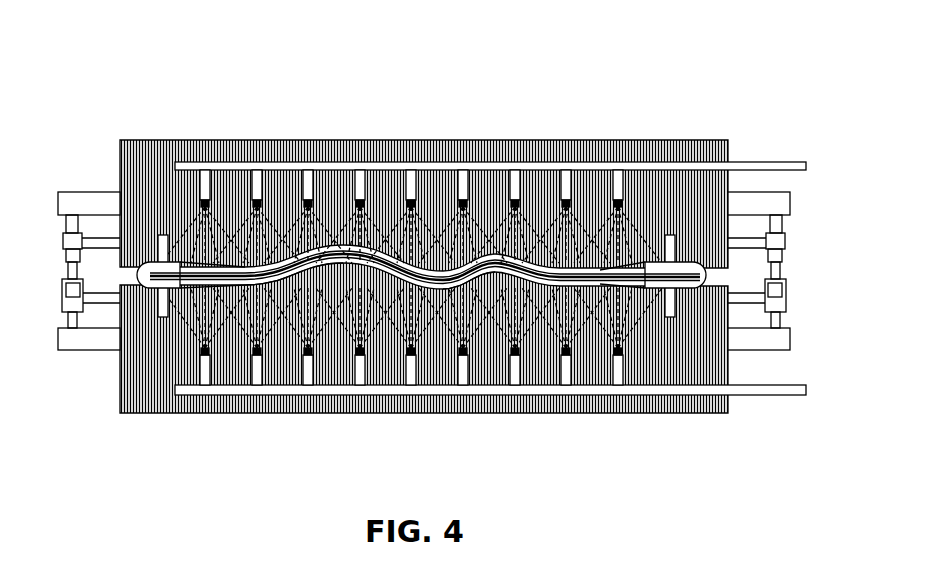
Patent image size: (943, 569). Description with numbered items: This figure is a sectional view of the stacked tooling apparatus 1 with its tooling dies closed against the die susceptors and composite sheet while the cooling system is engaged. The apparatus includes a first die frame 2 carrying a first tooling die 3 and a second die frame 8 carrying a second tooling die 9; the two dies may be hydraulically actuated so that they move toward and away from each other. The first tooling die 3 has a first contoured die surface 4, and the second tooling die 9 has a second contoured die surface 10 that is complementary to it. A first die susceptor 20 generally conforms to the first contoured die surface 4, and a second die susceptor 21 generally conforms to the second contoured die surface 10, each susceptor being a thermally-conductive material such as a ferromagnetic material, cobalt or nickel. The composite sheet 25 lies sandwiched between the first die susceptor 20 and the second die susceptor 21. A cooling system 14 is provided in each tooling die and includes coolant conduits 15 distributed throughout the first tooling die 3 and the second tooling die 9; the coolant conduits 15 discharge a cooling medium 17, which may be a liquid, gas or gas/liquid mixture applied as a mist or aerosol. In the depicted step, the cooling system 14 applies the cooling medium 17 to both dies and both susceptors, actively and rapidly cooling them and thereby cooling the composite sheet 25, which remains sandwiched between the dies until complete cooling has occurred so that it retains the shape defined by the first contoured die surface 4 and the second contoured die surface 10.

The stacked tooling apparatus 1 is at (90, 86).
The first die frame 2 is at (84, 340).
The first tooling die 3 is at (247, 415).
The first contoured die surface 4 is at (133, 284).
The second die frame 8 is at (85, 205).
The second tooling die 9 is at (220, 139).
The second contoured die surface 10 is at (714, 263).
The cooling system 14 is at (762, 156).
The coolant conduits 15 is at (620, 197).
The cooling medium 17 is at (313, 212).
The first die susceptor 20 is at (466, 288).
The second die susceptor 21 is at (578, 272).
The composite sheet 25 is at (265, 284).